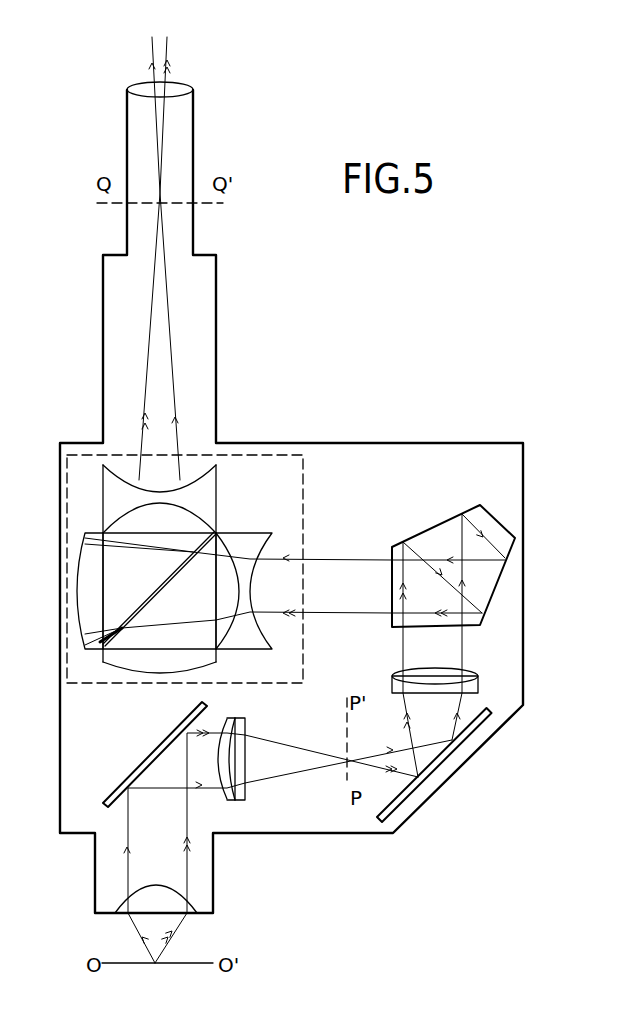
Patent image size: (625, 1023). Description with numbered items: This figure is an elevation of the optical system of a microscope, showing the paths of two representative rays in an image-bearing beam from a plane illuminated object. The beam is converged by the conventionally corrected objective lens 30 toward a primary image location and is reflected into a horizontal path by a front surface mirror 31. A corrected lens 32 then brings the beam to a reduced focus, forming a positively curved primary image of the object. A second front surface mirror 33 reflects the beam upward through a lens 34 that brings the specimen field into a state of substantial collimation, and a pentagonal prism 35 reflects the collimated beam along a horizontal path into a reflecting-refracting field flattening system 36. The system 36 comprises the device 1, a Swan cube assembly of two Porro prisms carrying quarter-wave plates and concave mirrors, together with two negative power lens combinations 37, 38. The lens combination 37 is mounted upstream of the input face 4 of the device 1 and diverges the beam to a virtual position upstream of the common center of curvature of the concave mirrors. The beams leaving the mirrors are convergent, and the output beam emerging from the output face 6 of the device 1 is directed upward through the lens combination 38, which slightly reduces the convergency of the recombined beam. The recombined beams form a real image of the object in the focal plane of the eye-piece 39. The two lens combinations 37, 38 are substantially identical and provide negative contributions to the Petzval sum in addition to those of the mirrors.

The device 1 is at (77, 540).
The lateral face 4 is at (214, 630).
The lateral face 6 is at (205, 524).
The objective lens 30 is at (192, 908).
The front surface mirror 31 is at (120, 785).
The corrected lens 32 is at (246, 724).
The front surface mirror 33 is at (442, 765).
The lens 34 is at (478, 685).
The pentagonal prism 35 is at (470, 512).
The reflecting-refracting field flattening system 36 is at (66, 473).
The negative power lens combination 37 is at (268, 533).
The negative power lens combination 38 is at (214, 482).
The eye-piece 39 is at (189, 84).